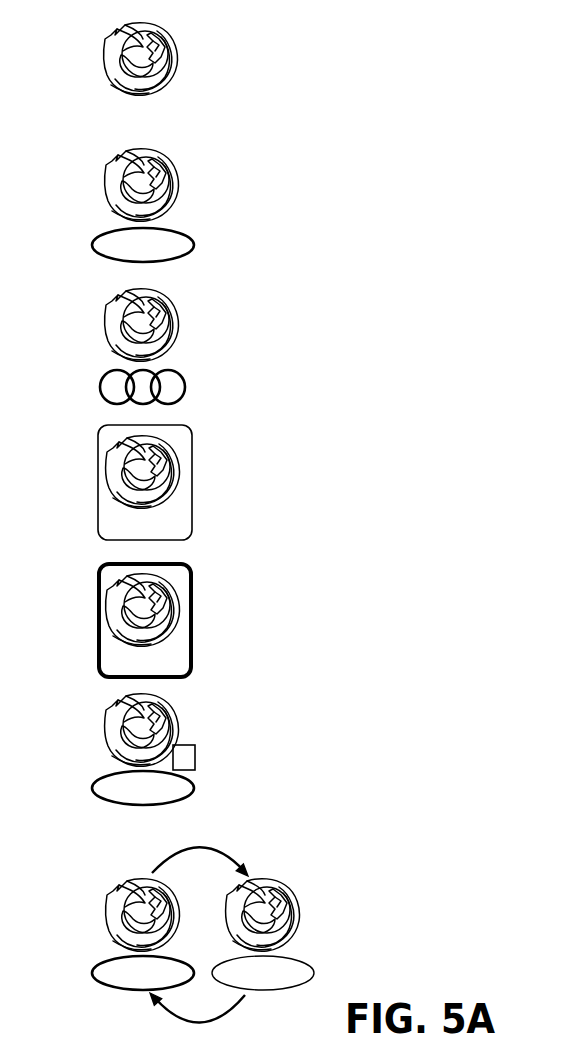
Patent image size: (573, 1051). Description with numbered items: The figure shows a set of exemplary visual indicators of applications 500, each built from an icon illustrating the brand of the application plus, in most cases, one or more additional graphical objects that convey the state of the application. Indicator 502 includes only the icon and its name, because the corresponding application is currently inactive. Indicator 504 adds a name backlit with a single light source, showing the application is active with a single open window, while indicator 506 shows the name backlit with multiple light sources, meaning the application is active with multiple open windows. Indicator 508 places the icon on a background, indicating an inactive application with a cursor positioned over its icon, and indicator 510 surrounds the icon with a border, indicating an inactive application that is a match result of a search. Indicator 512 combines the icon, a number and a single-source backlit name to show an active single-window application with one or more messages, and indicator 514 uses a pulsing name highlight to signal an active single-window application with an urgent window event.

The set of application icon display states 500 is at (224, 63).
The indicator 502 is at (107, 70).
The indicator 504 is at (105, 199).
The indicator 506 is at (105, 340).
The indicator 508 is at (105, 489).
The indicator 510 is at (104, 632).
The indicator 512 is at (105, 747).
The indicator 514 is at (106, 933).